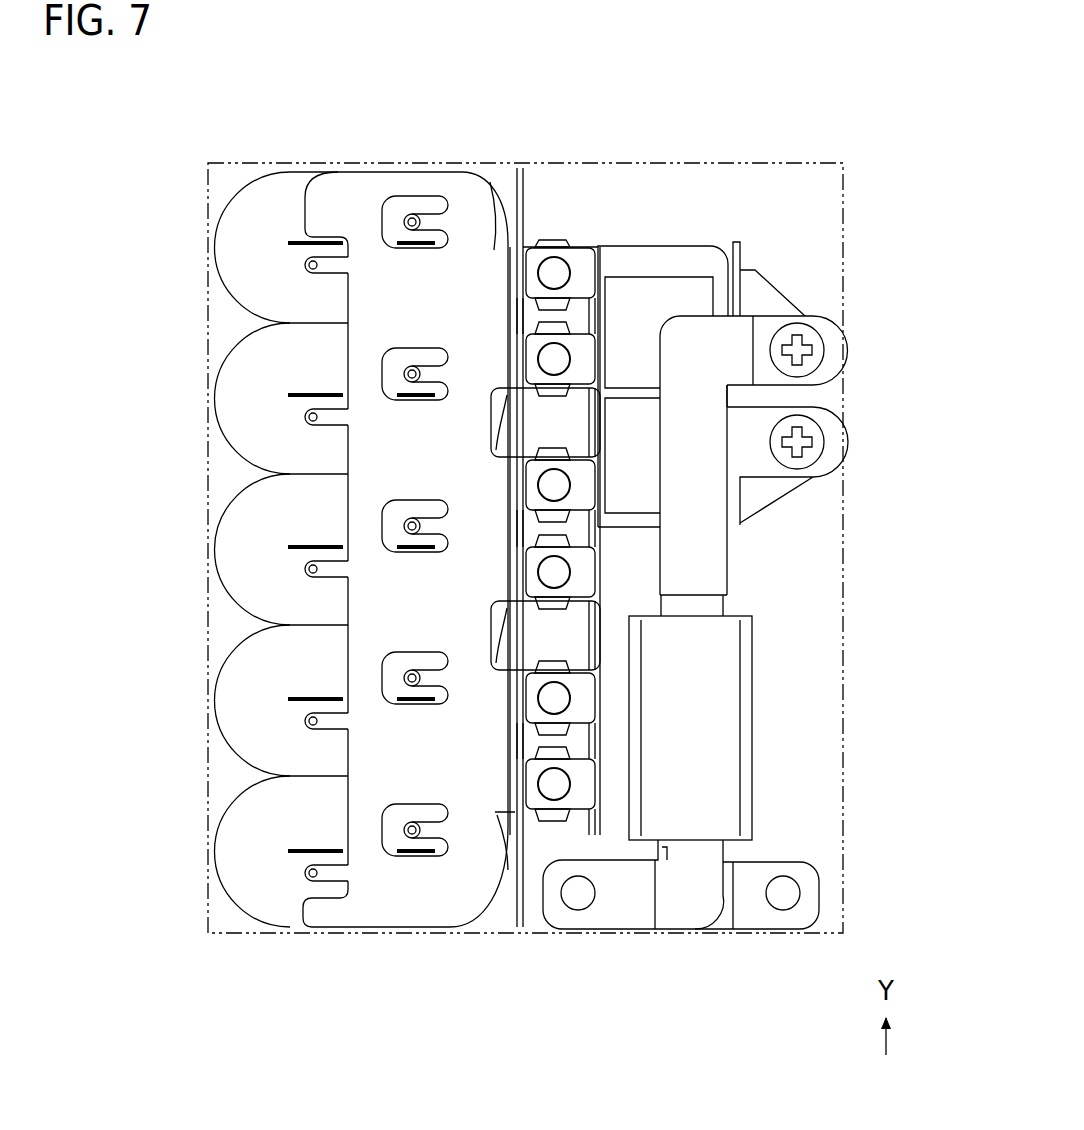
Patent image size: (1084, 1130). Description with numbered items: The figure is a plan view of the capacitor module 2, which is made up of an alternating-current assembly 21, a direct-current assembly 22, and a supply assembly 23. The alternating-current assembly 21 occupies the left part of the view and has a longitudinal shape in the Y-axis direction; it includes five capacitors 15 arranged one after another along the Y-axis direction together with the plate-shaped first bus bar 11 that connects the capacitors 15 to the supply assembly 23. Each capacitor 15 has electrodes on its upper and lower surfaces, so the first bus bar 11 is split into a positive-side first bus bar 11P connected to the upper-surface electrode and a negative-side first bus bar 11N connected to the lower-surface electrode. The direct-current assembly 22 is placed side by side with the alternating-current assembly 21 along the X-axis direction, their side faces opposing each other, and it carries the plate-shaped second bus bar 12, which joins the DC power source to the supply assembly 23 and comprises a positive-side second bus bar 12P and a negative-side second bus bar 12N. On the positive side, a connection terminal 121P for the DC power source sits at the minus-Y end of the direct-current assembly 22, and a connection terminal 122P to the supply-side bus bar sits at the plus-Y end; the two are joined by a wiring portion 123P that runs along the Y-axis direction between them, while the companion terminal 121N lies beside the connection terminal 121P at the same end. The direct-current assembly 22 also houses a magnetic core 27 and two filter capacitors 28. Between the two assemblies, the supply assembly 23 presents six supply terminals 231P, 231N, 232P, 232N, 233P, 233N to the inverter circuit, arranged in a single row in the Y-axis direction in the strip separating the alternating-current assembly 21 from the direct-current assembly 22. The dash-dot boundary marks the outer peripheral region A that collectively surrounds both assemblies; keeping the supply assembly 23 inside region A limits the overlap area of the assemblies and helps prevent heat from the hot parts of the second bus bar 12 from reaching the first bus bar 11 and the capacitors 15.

The capacitor module 2 is at (777, 110).
The outer peripheral region A is at (638, 162).
The alternating-current assembly 21 is at (250, 167).
The direct-current assembly 22 is at (777, 216).
The supply assembly 23 is at (556, 240).
The first bus bar 11 is at (520, 92).
The positive-side first bus bar 11P is at (388, 172).
The negative-side first bus bar 11N is at (496, 172).
The second bus bar 12 is at (850, 207).
The positive-side second bus bar 12P is at (846, 350).
The negative-side second bus bar 12N is at (846, 435).
The capacitor 15 is at (222, 232).
The magnetic core 27 is at (738, 728).
The filter capacitor 28 is at (683, 283).
The connection terminal 121P is at (610, 935).
The negative terminal tab 121N is at (773, 935).
The connection terminal 122P is at (800, 316).
The wiring portion 123P is at (705, 557).
The supply terminal 231P is at (537, 273).
The supply terminal 231N is at (537, 358).
The supply terminal 232P is at (537, 485).
The supply terminal 232N is at (537, 572).
The supply terminal 233P is at (537, 698).
The supply terminal 233N is at (537, 784).